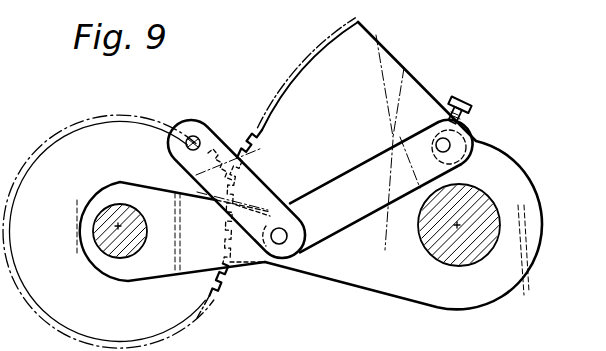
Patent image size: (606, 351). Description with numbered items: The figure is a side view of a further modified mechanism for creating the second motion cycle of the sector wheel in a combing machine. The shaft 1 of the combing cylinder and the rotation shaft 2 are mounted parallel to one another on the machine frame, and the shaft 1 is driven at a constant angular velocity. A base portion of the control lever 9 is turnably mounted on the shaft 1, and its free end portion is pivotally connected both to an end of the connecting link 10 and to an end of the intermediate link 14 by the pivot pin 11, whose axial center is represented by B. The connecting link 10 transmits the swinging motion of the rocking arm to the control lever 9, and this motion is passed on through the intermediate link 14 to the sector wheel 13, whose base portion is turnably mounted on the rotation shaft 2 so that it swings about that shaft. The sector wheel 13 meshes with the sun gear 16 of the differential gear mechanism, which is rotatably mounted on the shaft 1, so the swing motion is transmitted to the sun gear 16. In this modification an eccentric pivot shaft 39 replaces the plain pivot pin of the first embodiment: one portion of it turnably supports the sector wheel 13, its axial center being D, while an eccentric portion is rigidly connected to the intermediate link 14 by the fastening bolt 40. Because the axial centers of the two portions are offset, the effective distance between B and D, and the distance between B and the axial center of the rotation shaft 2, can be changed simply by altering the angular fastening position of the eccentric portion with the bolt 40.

The shaft 1 is at (93, 225).
The rotation shaft 2 is at (488, 250).
The control lever 9 is at (185, 263).
The connecting link 10 is at (193, 123).
The pivot pin 11 is at (266, 263).
The sector wheel 13 is at (356, 43).
The intermediate link 14 is at (352, 176).
The sun gear 16 is at (67, 158).
The eccentric pivot shaft 39 is at (452, 143).
The fastening bolt 40 is at (468, 102).
The axial center of pivot pin B is at (281, 245).
The axial center of pivot shaft portion D is at (441, 137).